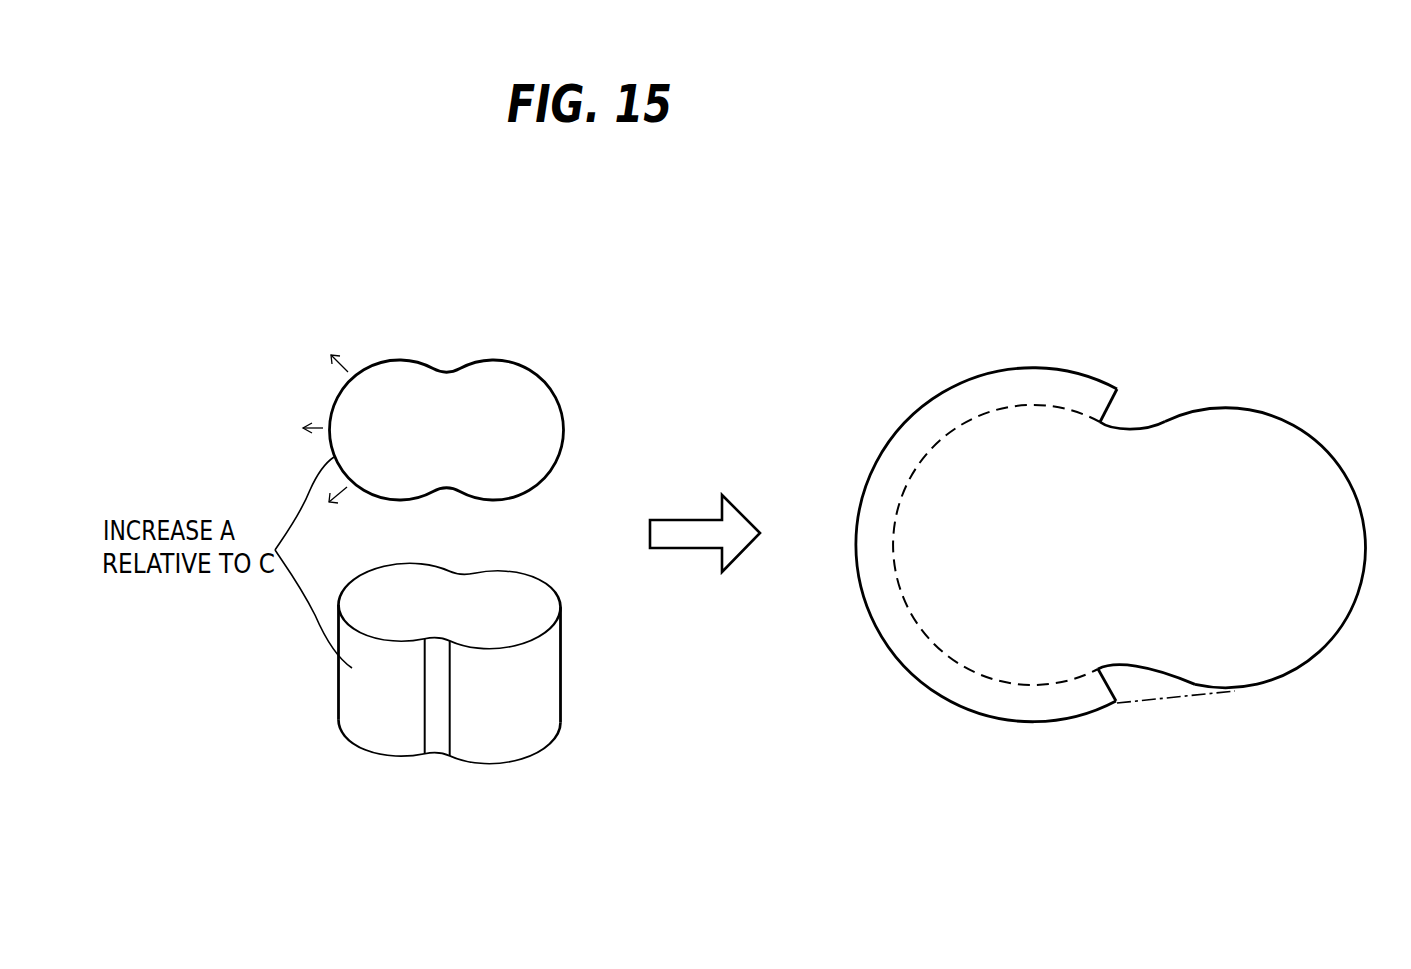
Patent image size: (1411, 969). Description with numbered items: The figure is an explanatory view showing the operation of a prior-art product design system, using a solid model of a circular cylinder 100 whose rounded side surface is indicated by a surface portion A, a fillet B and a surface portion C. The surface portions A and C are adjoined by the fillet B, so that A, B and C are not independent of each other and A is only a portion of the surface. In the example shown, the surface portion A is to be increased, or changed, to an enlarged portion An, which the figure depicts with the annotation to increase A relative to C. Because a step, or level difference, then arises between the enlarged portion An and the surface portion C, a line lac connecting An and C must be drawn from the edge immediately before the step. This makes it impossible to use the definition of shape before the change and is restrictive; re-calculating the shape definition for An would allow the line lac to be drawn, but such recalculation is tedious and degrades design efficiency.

The member with two-lobed cross section 100 is at (505, 358).
The rounded side surface portion A is at (352, 388).
The fillet B is at (443, 372).
The rounded side surface portion C is at (553, 439).
The increased surface portion An is at (895, 436).
The connecting line lac is at (1138, 703).